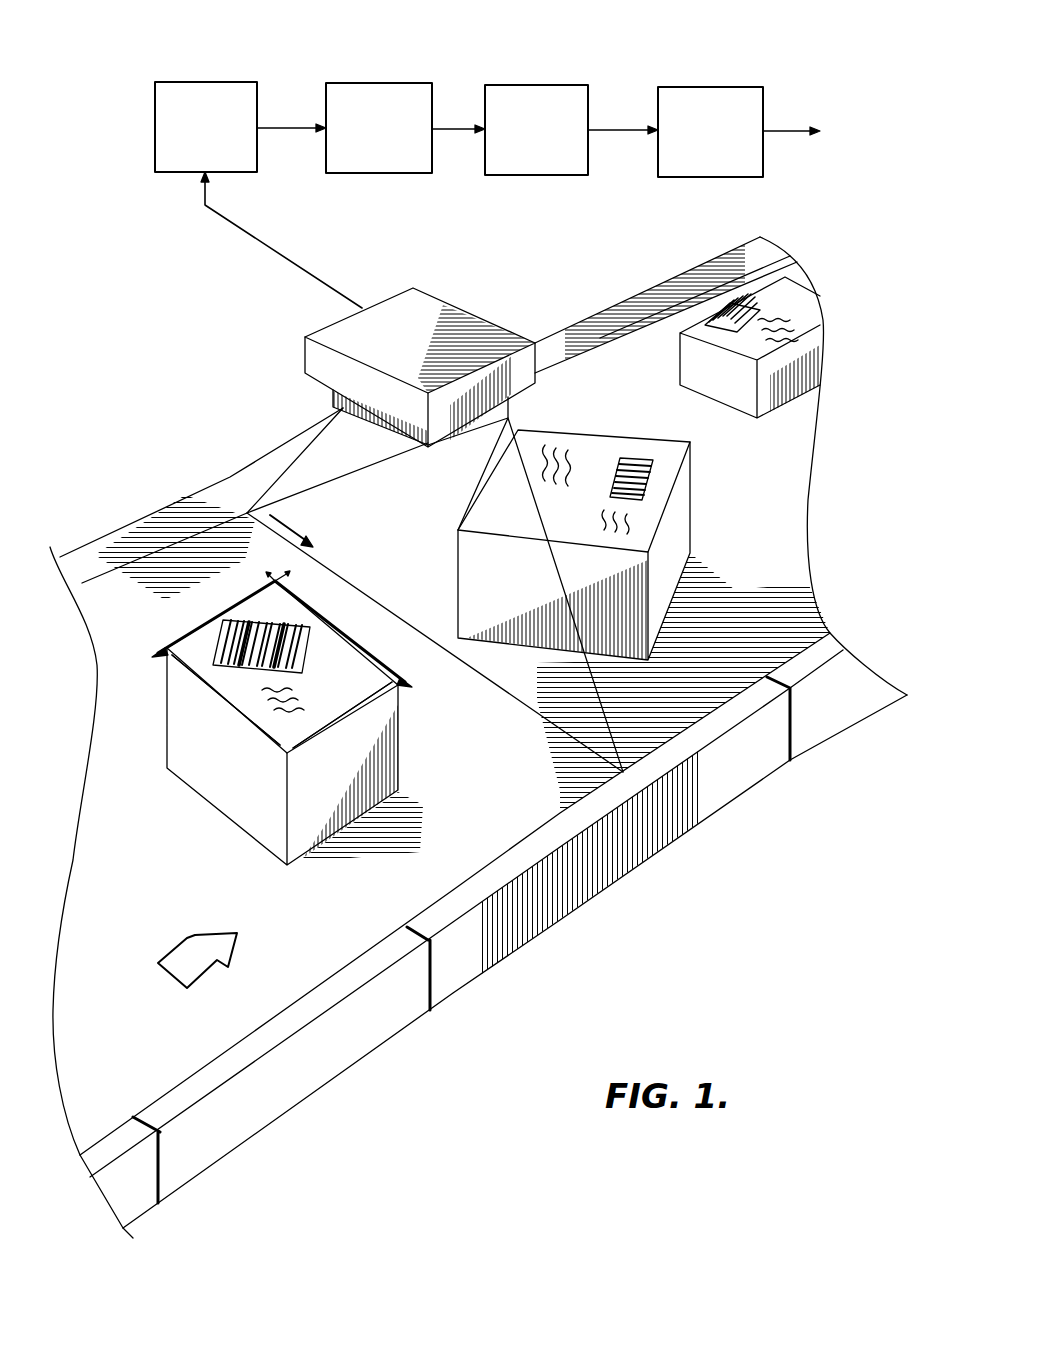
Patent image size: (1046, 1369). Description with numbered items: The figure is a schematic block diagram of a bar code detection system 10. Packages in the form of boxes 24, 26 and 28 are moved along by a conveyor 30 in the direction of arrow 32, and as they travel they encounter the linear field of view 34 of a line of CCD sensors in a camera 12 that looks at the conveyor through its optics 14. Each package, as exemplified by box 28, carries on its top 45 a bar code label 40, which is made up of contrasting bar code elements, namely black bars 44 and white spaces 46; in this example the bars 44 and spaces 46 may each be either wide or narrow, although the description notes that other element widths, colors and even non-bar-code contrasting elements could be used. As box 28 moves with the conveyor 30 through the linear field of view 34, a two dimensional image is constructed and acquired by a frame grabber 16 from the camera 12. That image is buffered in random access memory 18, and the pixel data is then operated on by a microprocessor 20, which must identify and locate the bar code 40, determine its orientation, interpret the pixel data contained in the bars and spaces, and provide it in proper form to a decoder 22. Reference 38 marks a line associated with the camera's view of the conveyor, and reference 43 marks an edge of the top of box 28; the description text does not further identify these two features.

The bar code detection system 10 is at (758, 36).
The camera 12 is at (422, 303).
The optics 14 is at (333, 397).
The frame grabber 16 is at (212, 82).
The random access memory (RAM) 18 is at (375, 83).
The microprocessor 20 is at (530, 85).
The decoder 22 is at (740, 87).
The box 24 is at (790, 380).
The box 26 is at (668, 572).
The box 28 is at (375, 767).
The conveyor 30 is at (387, 898).
The arrow 32 is at (178, 960).
The linear field of view 34 is at (233, 537).
The light plane edge 38 is at (297, 457).
The bar code label 40 is at (263, 622).
The top surface edge 43 is at (297, 700).
The black bars 44 is at (253, 667).
The top 45 is at (277, 733).
The white spaces 46 is at (272, 686).